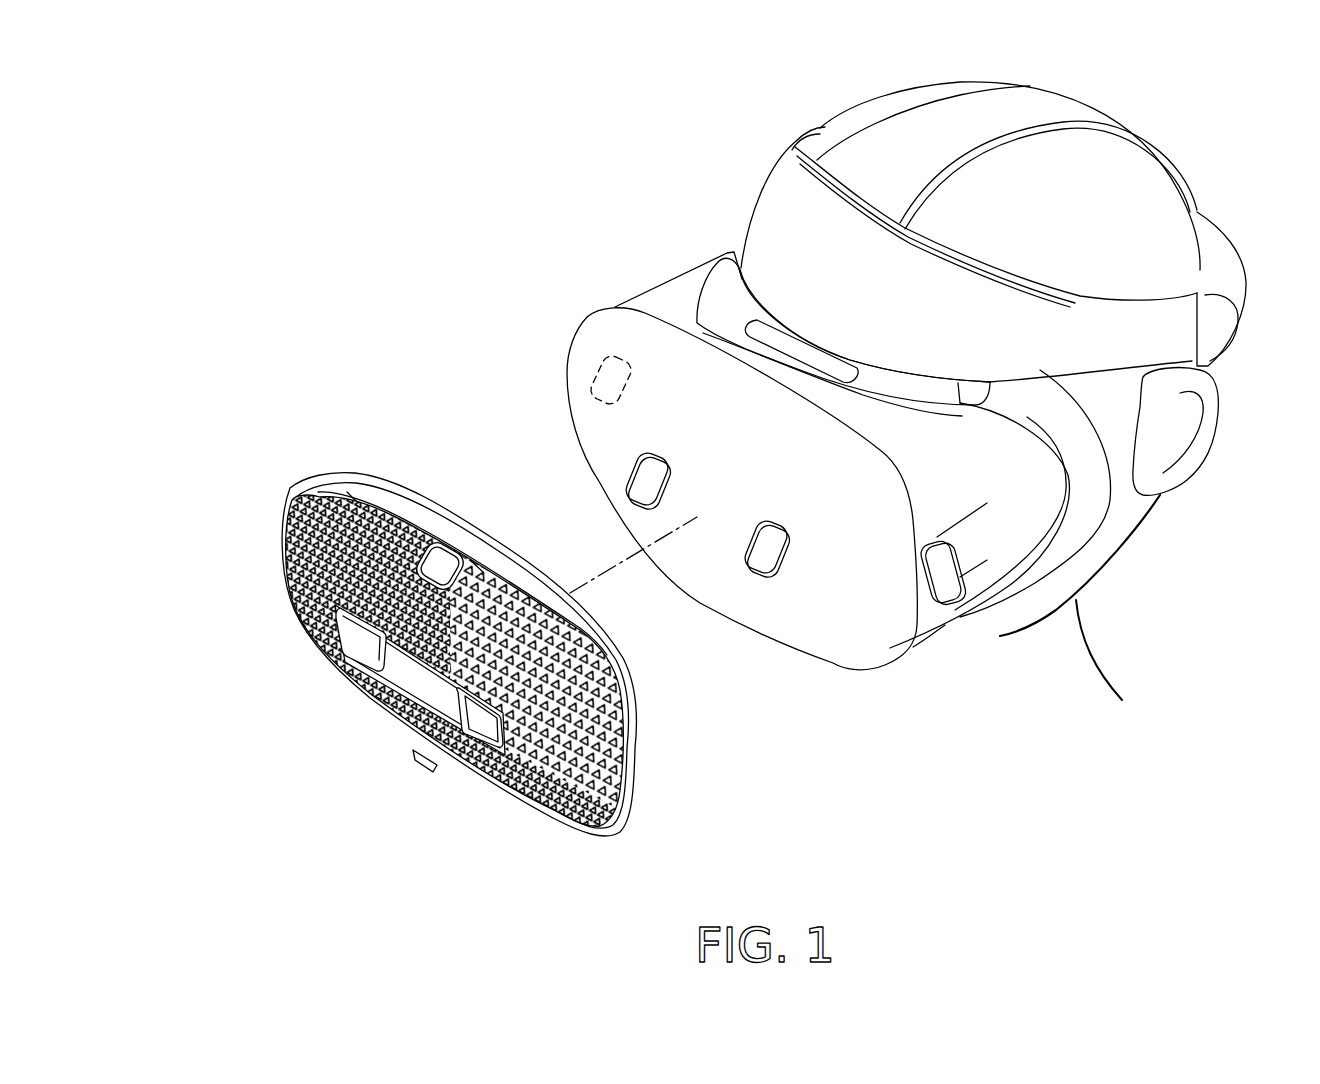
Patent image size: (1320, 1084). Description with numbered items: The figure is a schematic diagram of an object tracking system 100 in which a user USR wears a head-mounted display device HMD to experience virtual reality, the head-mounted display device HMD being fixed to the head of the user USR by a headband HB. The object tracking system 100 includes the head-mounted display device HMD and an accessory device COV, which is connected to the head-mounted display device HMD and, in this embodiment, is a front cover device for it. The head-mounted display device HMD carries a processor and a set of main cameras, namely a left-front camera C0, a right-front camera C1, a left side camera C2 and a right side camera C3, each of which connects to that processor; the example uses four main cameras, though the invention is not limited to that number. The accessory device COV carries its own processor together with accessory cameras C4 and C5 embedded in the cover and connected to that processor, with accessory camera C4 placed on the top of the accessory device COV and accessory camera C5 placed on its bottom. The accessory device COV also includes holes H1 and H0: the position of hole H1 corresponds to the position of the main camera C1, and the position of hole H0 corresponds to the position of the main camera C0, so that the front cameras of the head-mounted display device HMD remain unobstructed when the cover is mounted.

The object tracking system 100 is at (201, 72).
The user USR is at (916, 95).
The headband HB is at (1093, 113).
The head-mounted display device HMD is at (785, 485).
The accessory device COV is at (420, 651).
The left-front camera C0 is at (760, 553).
The right-front camera C1 is at (633, 480).
The left side camera C2 is at (945, 573).
The right side camera C3 is at (592, 392).
The accessory camera C4 is at (444, 549).
The accessory camera C5 is at (431, 767).
The hole H0 is at (457, 702).
The hole H1 is at (330, 694).